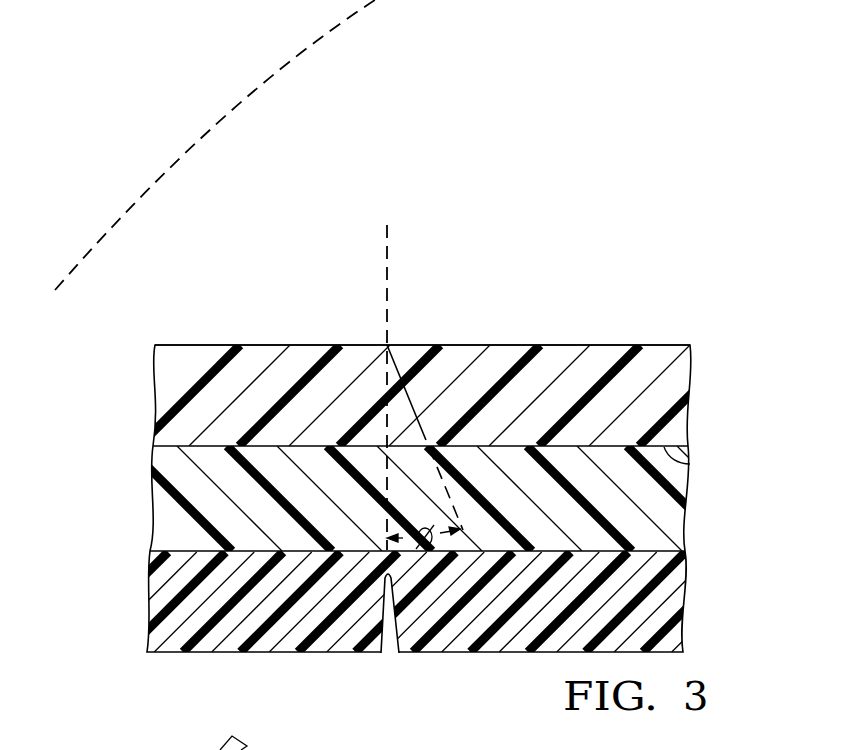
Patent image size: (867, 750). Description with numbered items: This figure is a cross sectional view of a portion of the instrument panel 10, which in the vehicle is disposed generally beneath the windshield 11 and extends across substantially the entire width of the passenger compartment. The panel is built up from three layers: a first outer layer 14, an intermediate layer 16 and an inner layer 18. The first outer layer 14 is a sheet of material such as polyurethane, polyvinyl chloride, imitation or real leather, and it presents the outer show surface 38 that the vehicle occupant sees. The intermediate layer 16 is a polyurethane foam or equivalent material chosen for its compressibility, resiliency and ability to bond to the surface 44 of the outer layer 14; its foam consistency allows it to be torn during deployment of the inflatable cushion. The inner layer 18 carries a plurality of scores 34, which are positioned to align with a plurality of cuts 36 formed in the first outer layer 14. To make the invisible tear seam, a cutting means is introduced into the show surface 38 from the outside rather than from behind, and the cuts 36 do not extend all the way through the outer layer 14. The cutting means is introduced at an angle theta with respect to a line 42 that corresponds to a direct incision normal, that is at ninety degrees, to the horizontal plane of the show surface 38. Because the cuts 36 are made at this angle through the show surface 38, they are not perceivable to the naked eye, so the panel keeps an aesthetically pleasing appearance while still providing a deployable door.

The instrument panel 10 is at (689, 322).
The windshield 11 is at (226, 114).
The first outer layer 14 is at (668, 380).
The intermediate layer 16 is at (668, 522).
The inner layer 18 is at (668, 603).
The scores 34 is at (387, 637).
The cuts 36 is at (428, 420).
The outer show surface 38 is at (574, 345).
The line 42 is at (388, 262).
The surface 44 is at (690, 463).